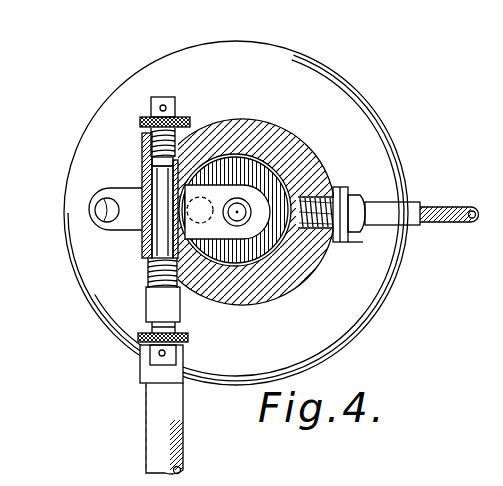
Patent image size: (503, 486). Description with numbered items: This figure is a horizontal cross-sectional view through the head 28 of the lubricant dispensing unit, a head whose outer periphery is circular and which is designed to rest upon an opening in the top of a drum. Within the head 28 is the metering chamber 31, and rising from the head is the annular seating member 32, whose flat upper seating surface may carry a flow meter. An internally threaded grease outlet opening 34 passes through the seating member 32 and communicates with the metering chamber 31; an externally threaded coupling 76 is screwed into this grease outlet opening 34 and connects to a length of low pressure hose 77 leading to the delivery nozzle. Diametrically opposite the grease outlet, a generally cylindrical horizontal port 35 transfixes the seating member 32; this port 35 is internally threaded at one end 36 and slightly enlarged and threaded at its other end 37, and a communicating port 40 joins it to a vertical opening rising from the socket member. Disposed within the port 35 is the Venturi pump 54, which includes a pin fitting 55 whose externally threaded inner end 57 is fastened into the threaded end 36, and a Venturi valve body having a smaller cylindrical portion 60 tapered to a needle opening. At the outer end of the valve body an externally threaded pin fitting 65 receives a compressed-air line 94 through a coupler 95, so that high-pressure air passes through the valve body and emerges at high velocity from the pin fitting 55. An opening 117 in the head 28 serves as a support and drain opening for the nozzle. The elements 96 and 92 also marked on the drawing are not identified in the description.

The head 28 is at (313, 311).
The metering chamber 31 is at (262, 182).
The annular seating member 32 is at (309, 152).
The grease outlet opening 34 is at (331, 194).
The port 35 is at (149, 165).
The internally threaded end of port 36 is at (143, 136).
The enlarged internally threaded end of port 37 is at (147, 294).
The communicating port 40 is at (202, 206).
The Venturi pump 54 is at (160, 182).
The pin fitting 55 is at (182, 98).
The external threads of pin fitting 57 is at (198, 135).
The smaller cylindrical portion of Venturi valve body 60 is at (158, 245).
The pin fitting 65 is at (187, 334).
The coupling 76 is at (363, 232).
The low pressure hose 77 is at (437, 207).
The member 92 is at (502, 484).
The compressed-air line 94 is at (189, 437).
The coupler 95 is at (189, 384).
The pin 96 is at (248, 220).
The opening 117 is at (100, 222).